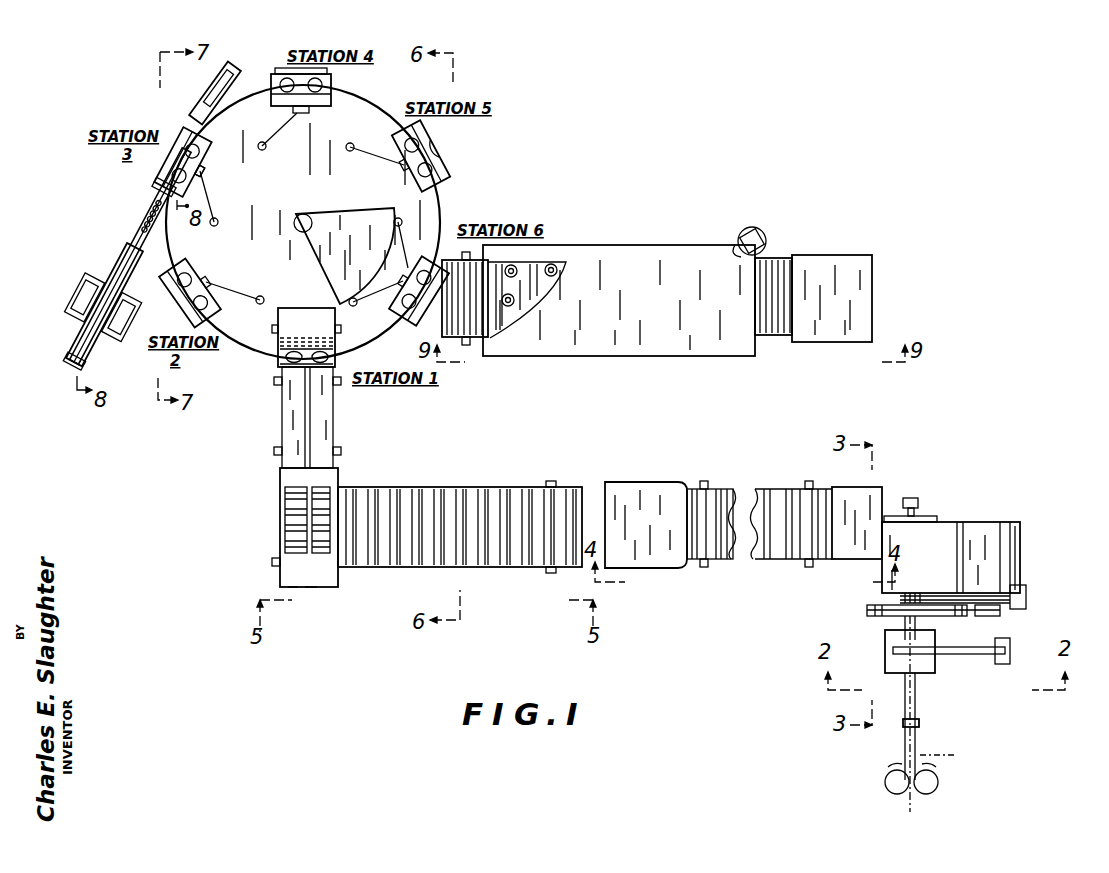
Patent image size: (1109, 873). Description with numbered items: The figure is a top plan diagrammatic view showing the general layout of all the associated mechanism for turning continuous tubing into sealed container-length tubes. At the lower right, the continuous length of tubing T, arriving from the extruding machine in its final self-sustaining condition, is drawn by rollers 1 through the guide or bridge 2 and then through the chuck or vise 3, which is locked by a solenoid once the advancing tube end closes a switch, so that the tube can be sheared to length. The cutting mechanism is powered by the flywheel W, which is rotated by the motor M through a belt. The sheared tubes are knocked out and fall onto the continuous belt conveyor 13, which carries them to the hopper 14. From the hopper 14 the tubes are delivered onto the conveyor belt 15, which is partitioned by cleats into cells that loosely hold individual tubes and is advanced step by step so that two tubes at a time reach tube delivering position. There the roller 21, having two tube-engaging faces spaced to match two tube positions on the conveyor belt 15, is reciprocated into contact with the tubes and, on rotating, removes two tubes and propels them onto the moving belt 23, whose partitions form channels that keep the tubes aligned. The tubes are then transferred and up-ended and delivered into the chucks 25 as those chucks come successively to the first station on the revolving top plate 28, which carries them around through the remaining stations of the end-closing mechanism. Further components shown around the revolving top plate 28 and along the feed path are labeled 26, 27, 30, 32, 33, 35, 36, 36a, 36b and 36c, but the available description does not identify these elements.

The rollers 1 is at (936, 792).
The guide or bridge 2 is at (916, 723).
The chuck or vise 3 is at (886, 651).
The continuous belt conveyor 13 is at (767, 562).
The hopper 14 is at (644, 484).
The conveyor belt 15 is at (464, 487).
The roller 21 is at (300, 510).
The belt 23 is at (291, 424).
The chucks 25 is at (196, 264).
The clamp 26 is at (207, 203).
The pusher cam 27 is at (345, 210).
The revolving top plate 28 is at (437, 202).
The feed rail 30 is at (66, 348).
The chain 32 is at (141, 222).
The clamp at station 3 33 is at (170, 136).
The clamp at station 6 35 is at (344, 310).
The rollers 36 is at (556, 246).
The housing 36a is at (664, 250).
The plate 36b is at (556, 270).
The motor housing 36c is at (858, 300).
The motor M is at (1022, 559).
The flywheel W is at (867, 608).
The tubing T is at (920, 755).